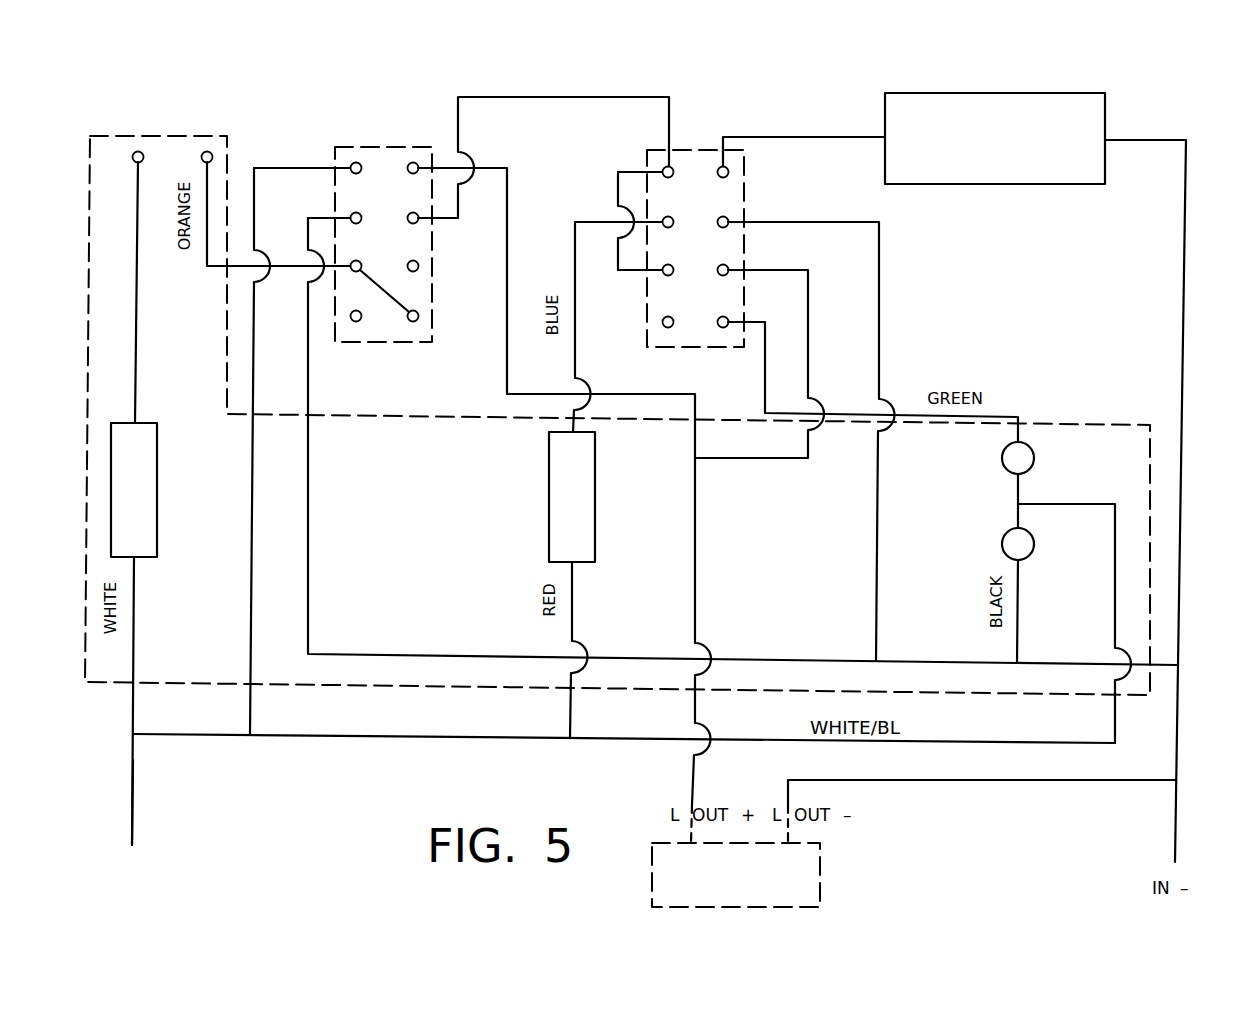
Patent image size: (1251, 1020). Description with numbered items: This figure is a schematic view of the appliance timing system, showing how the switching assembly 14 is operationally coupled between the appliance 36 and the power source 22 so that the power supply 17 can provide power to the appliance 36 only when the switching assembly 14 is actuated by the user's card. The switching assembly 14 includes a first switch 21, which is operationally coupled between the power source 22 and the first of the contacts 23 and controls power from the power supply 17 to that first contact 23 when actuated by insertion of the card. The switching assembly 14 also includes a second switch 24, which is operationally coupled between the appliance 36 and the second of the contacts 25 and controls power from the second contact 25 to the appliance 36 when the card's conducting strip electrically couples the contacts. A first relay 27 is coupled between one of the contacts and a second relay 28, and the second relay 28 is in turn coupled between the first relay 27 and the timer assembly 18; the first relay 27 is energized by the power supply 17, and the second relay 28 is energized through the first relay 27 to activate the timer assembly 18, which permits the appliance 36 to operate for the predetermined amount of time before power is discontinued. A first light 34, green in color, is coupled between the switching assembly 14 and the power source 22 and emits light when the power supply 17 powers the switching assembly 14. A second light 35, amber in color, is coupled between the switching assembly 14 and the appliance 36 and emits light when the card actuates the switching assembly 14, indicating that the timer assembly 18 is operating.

The switching assembly 14 is at (450, 552).
The power supply 17 is at (123, 858).
The timer assembly 18 is at (1078, 113).
The first switch 21 is at (151, 502).
The power source 22 is at (137, 860).
The first of the contacts 23 is at (138, 151).
The second switch 24 is at (557, 540).
The second of the contacts 25 is at (207, 151).
The first relay 27 is at (388, 160).
The second relay 28 is at (693, 163).
The first light 34 is at (1037, 458).
The second light 35 is at (1028, 548).
The appliance 36 is at (813, 885).